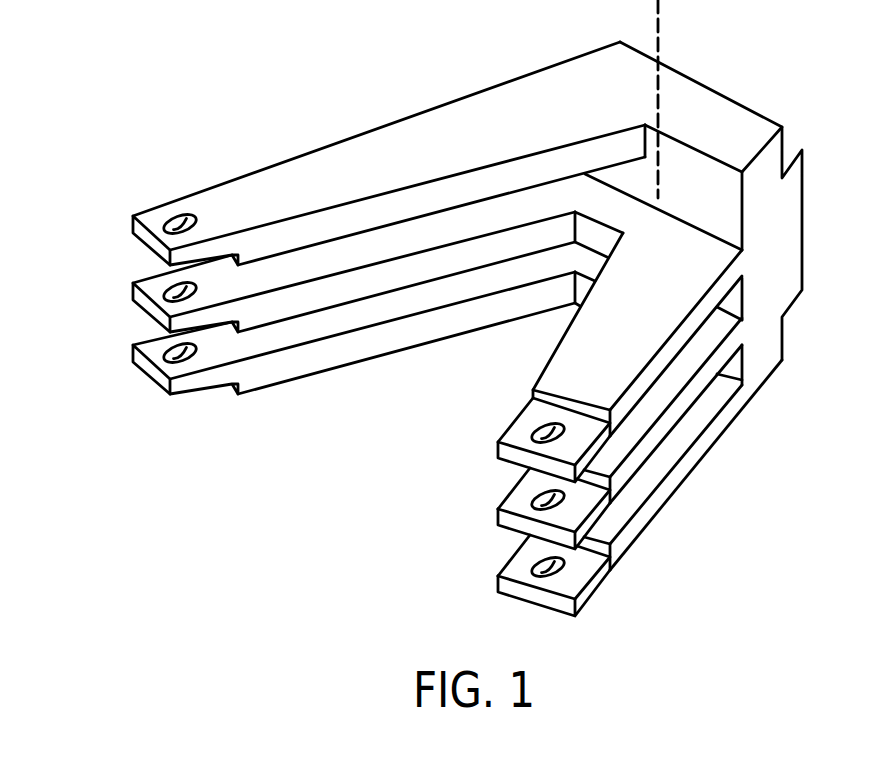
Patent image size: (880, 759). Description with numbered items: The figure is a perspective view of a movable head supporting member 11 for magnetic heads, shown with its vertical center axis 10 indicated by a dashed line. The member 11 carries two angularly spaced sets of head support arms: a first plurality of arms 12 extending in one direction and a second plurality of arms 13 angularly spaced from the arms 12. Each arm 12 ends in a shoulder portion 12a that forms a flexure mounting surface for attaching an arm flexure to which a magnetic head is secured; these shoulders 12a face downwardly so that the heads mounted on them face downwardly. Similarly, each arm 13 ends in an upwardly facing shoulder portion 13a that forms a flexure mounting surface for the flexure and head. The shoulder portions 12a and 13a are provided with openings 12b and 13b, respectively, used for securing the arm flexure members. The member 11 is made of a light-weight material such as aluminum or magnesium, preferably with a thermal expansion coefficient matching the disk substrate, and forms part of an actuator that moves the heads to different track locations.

The vertical center axis 10 is at (661, 40).
The movable head supporting member 11 is at (629, 99).
The first plurality of arms 12 is at (365, 128).
The shoulder portion 12a is at (147, 256).
The opening 12b is at (178, 216).
The second plurality of arms 13 is at (638, 339).
The shoulder portion 13a is at (525, 433).
The opening 13b is at (548, 425).